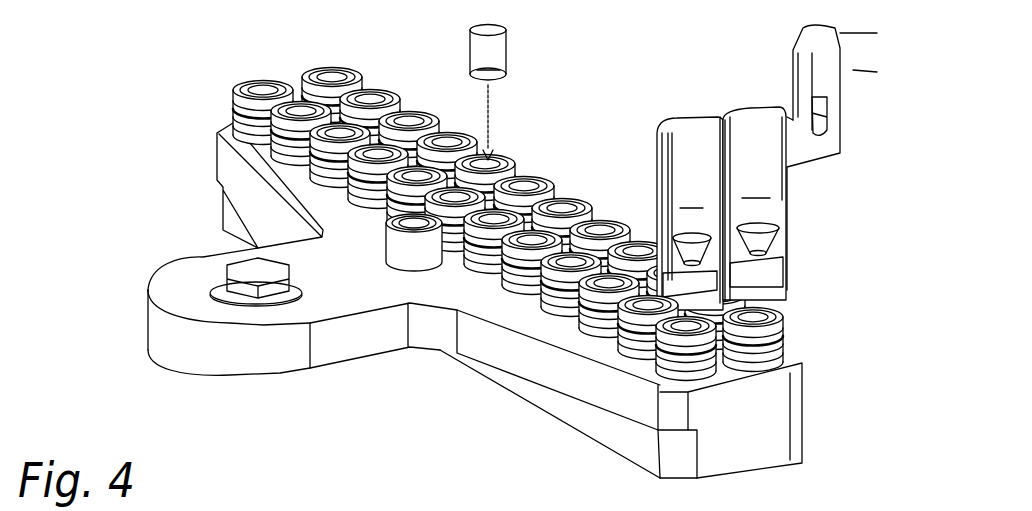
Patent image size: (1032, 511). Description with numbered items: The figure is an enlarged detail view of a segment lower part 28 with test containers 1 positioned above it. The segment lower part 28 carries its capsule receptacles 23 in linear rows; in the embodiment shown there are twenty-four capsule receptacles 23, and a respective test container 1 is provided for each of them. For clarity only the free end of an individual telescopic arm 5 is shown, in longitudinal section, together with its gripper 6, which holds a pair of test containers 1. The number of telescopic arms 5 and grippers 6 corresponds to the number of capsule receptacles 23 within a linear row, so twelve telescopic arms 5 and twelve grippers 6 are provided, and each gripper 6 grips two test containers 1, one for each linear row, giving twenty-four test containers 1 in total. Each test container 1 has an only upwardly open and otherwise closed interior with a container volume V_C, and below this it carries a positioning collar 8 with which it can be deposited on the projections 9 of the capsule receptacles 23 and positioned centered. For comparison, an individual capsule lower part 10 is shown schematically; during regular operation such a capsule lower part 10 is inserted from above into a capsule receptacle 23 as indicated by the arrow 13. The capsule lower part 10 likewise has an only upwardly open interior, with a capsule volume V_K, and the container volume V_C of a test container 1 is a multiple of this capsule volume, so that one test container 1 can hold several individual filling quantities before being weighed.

The test container 1 is at (754, 208).
The telescopic arm 5 is at (852, 63).
The gripper 6 is at (837, 147).
The positioning collar 8 is at (788, 268).
The projection 9 is at (772, 343).
The capsule lower part 10 is at (507, 52).
The arrow 13 is at (488, 137).
The capsule receptacle 23 is at (510, 153).
The segment lower part 28 is at (553, 368).